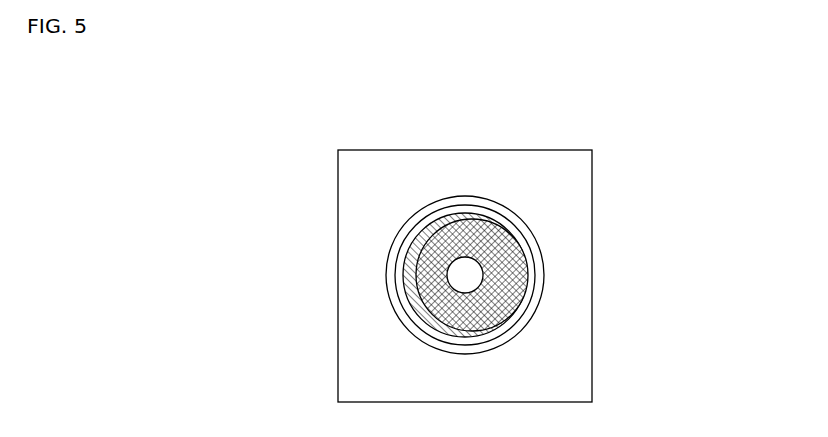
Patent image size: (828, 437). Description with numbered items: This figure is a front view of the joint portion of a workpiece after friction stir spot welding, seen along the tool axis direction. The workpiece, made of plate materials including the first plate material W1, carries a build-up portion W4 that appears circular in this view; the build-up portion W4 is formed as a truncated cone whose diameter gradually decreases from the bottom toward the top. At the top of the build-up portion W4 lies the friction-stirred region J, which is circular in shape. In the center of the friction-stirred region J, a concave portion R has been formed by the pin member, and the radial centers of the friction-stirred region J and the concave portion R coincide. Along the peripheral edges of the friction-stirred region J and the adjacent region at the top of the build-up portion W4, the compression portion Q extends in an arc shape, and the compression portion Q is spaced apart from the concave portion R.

The first plate material W1 is at (592, 239).
The build-up portion W4 is at (534, 299).
The friction-stirred region J is at (503, 228).
The compression portion Q is at (402, 244).
The concave portion R is at (415, 273).